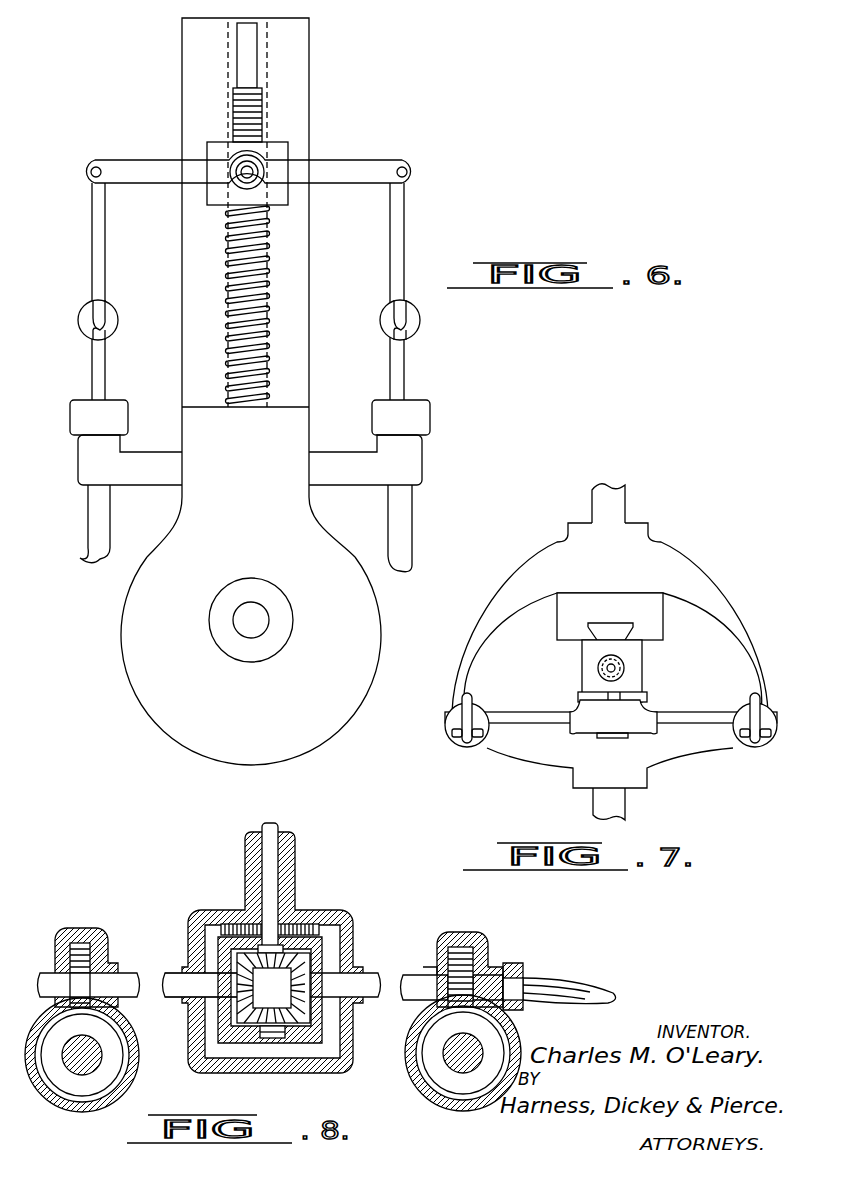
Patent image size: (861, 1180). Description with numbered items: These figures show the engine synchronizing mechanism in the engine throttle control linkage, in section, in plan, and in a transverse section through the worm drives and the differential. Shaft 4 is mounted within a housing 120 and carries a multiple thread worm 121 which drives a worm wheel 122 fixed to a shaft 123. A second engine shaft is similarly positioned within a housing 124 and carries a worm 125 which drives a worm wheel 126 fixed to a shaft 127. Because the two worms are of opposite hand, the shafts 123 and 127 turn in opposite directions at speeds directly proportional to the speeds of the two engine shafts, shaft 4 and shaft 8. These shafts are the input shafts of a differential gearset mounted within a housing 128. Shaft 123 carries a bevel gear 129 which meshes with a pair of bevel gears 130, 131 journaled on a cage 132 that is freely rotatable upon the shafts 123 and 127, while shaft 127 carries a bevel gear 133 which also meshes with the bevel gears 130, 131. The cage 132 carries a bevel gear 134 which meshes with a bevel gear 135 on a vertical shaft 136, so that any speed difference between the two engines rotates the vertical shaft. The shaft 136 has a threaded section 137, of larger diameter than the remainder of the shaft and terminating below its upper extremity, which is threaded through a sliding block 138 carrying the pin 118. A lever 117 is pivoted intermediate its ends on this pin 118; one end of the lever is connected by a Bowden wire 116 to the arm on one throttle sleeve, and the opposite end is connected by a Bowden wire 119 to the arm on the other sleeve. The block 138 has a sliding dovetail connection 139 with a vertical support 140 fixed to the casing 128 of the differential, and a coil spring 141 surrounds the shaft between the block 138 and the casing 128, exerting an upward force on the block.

In FIG. 6, the Bowden wire 116 is at (182, 50).
In FIG. 6, the lever 117 is at (137, 167).
In FIG. 7, the lever 117 is at (527, 724).
In FIG. 6, the pin 118 is at (260, 163).
In FIG. 7, the pin 118 is at (592, 700).
In FIG. 6, the Bowden wire 119 is at (402, 513).
In FIG. 6, the shaft 123 is at (257, 617).
In FIG. 7, the shaft 123 is at (625, 813).
In FIG. 8, the shaft 123 is at (362, 968).
In FIG. 7, the shaft 127 is at (619, 502).
In FIG. 8, the shaft 127 is at (110, 966).
In FIG. 6, the housing 128 is at (132, 640).
In FIG. 8, the housing 128 is at (305, 905).
In FIG. 6, the vertical shaft 136 is at (250, 57).
In FIG. 7, the vertical shaft 136 is at (622, 668).
In FIG. 8, the vertical shaft 136 is at (272, 835).
In FIG. 6, the threaded section 137 is at (257, 100).
In FIG. 6, the sliding block 138 is at (282, 153).
In FIG. 7, the sliding block 138 is at (635, 684).
In FIG. 7, the sliding dovetail connection 139 is at (630, 633).
In FIG. 7, the vertical support 140 is at (563, 633).
In FIG. 6, the coil spring 141 is at (263, 258).
In FIG. 8, the housing 120 is at (422, 1090).
In FIG. 8, the multiple thread worm 121 is at (420, 1035).
In FIG. 8, the worm wheel 122 is at (490, 950).
In FIG. 8, the housing 124 is at (112, 1033).
In FIG. 8, the worm 125 is at (105, 1028).
In FIG. 8, the worm wheel 126 is at (97, 950).
In FIG. 8, the bevel gear 129 is at (312, 986).
In FIG. 8, the bevel gear 130 is at (615, 968).
In FIG. 8, the bevel gear 131 is at (272, 988).
In FIG. 8, the cage 132 is at (235, 1040).
In FIG. 8, the bevel gear 133 is at (240, 986).
In FIG. 8, the bevel gear 134 is at (320, 940).
In FIG. 8, the bevel gear 135 is at (218, 925).
In FIG. 8, the shaft 8 is at (75, 1065).
In FIG. 8, the shaft 4 is at (472, 1052).